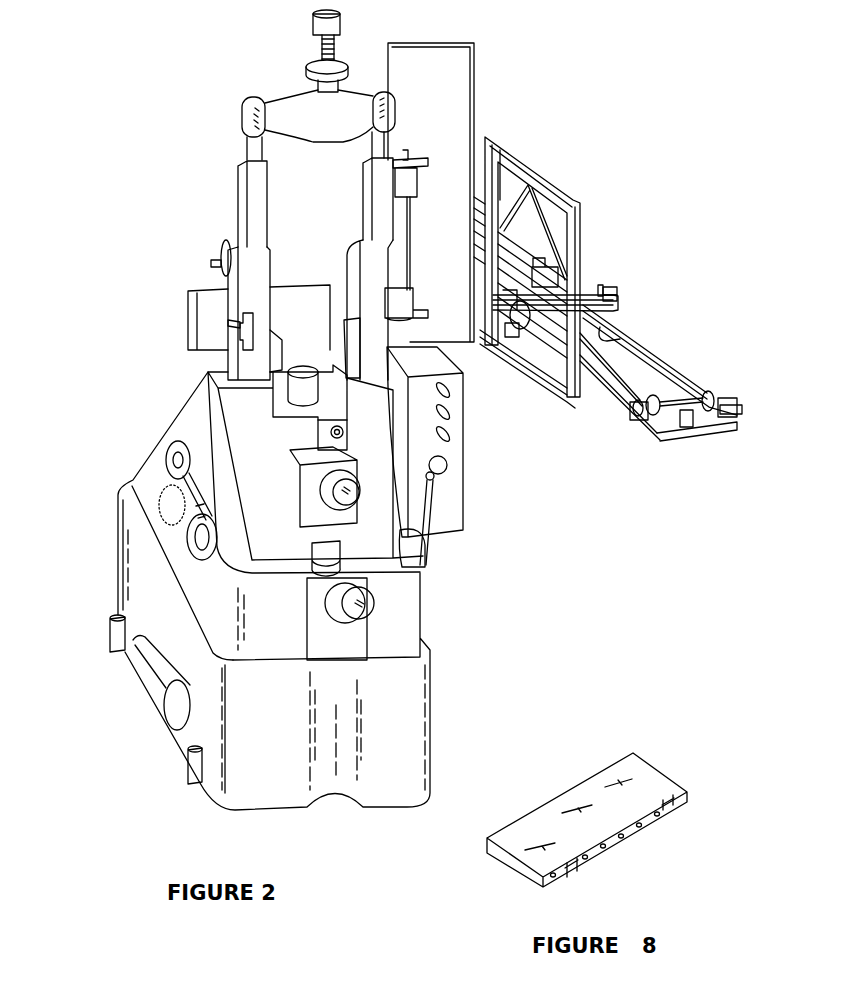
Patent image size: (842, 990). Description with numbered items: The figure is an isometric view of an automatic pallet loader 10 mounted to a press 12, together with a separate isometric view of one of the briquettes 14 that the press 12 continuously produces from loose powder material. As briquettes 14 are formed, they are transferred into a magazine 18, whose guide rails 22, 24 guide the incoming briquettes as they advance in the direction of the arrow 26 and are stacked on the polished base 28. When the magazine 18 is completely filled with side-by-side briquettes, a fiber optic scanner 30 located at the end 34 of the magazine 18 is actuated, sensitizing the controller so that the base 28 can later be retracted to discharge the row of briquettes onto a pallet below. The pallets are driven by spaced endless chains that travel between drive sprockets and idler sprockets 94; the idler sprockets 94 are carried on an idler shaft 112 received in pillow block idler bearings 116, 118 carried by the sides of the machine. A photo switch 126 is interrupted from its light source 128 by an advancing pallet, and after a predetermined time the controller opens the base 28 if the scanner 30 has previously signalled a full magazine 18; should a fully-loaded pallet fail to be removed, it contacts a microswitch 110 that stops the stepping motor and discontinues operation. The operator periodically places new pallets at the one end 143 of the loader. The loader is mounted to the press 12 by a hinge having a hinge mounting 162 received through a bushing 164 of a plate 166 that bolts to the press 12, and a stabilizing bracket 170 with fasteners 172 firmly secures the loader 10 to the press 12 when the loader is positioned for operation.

In FIG. 2, the automatic pallet loader 10 is at (667, 137).
In FIG. 2, the press 12 is at (455, 650).
In FIG. 8, the briquette 14 is at (643, 778).
In FIG. 2, the magazine 18 is at (615, 301).
In FIG. 2, the guide rail 22 is at (570, 280).
In FIG. 2, the guide rail 24 is at (548, 330).
In FIG. 2, the arrow 26 is at (504, 322).
In FIG. 2, the polished base 28 is at (517, 325).
In FIG. 2, the fiber optic scanner 30 is at (600, 292).
In FIG. 2, the end of the magazine 34 is at (607, 300).
In FIG. 2, the idler sprocket 94 is at (720, 402).
In FIG. 2, the microswitch 110 is at (683, 425).
In FIG. 2, the idler shaft 112 is at (678, 400).
In FIG. 2, the pillow block idler bearing 116 is at (722, 409).
In FIG. 2, the pillow block idler bearing 118 is at (640, 417).
In FIG. 2, the photo switch 126 is at (610, 303).
In FIG. 2, the light source 128 is at (620, 339).
In FIG. 2, the one end 143 is at (478, 207).
In FIG. 2, the hinge mounting 162 is at (409, 220).
In FIG. 2, the bushing 164 is at (413, 157).
In FIG. 2, the plate 166 is at (455, 70).
In FIG. 2, the stabilizing bracket 170 is at (230, 330).
In FIG. 2, the fastener 172 is at (233, 327).